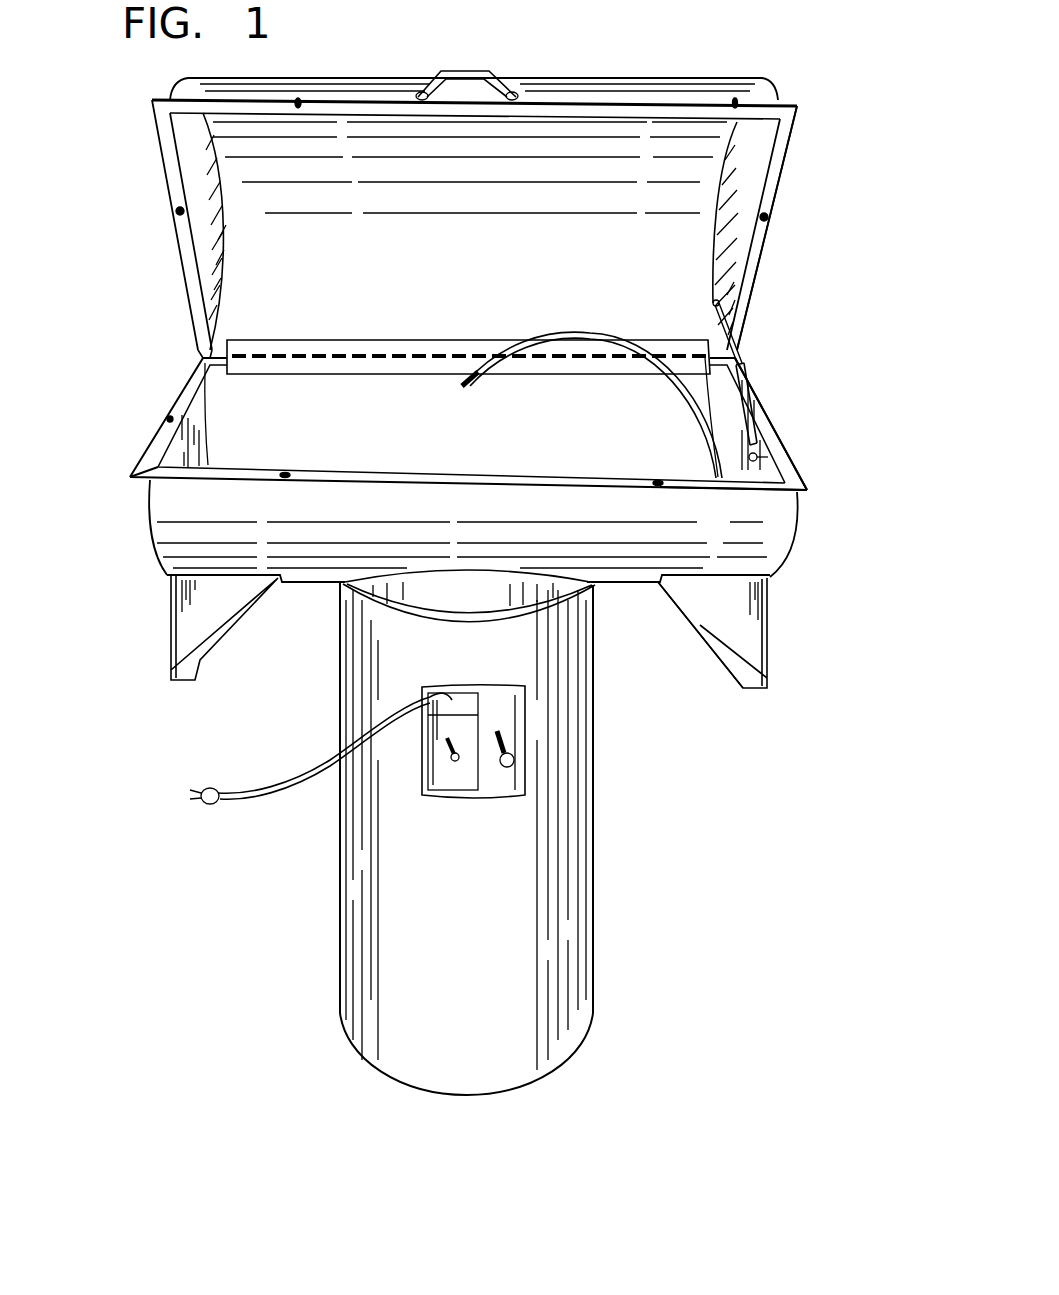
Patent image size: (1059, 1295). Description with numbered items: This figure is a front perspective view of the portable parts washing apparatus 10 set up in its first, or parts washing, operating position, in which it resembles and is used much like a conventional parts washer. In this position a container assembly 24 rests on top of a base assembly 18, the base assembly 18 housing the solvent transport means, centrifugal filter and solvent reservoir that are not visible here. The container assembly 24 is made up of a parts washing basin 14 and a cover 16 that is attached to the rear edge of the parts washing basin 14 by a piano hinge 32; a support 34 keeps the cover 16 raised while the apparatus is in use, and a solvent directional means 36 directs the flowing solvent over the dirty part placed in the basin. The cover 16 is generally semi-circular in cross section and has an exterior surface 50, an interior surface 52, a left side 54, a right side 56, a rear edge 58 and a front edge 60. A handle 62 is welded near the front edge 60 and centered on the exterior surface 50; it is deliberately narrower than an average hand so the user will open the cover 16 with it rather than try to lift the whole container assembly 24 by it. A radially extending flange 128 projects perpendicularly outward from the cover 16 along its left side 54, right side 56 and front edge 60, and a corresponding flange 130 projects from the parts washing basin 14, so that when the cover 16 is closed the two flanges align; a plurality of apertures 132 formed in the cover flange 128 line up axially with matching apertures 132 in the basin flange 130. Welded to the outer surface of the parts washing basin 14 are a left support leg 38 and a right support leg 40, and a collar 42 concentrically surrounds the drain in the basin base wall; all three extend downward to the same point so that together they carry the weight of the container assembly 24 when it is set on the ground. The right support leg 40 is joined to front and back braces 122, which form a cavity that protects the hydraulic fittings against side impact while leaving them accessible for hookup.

The portable parts washing apparatus 10 is at (782, 389).
The parts washing basin 14 is at (802, 508).
The cover 16 is at (714, 78).
The base assembly 18 is at (597, 886).
The container assembly 24 is at (178, 312).
The piano hinge 32 is at (360, 350).
The support 34 is at (737, 373).
The solvent directional means 36 is at (590, 337).
The left support leg 38 is at (183, 628).
The right support leg 40 is at (753, 645).
The collar 42 is at (523, 603).
The exterior surface 50 is at (593, 97).
The interior surface 52 is at (248, 202).
The left side 54 is at (167, 403).
The right side 56 is at (788, 443).
The rear edge 58 is at (388, 372).
The front edge 60 is at (753, 493).
The handle 62 is at (484, 70).
The front and back braces 122 is at (743, 626).
The radially extending flange 128 is at (790, 124).
The washing basin flange 130 is at (133, 478).
The apertures 132 is at (283, 475).